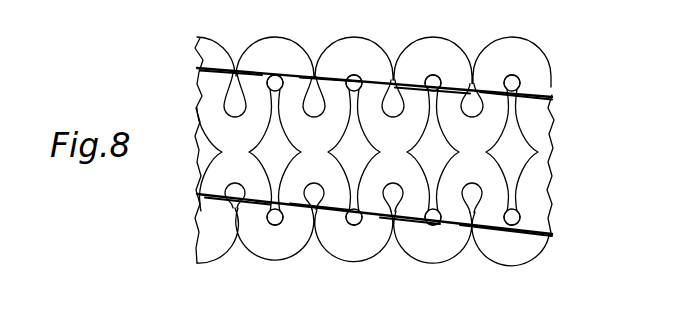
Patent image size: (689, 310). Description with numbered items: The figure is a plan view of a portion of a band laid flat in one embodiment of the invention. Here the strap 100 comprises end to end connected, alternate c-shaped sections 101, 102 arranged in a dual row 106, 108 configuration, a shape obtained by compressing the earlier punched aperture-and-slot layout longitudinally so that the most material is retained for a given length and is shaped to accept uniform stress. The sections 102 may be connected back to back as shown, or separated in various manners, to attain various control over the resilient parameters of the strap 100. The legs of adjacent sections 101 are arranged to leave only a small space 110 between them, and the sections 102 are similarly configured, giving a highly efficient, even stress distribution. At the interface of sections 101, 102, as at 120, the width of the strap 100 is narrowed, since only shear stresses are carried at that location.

The strap 100 is at (207, 105).
The c-shaped sections 101 is at (280, 47).
The c-shaped sections 102 is at (295, 105).
The row 106 is at (554, 139).
The row 108 is at (557, 203).
The small space 110 is at (394, 70).
The interface of sections 120 is at (251, 91).